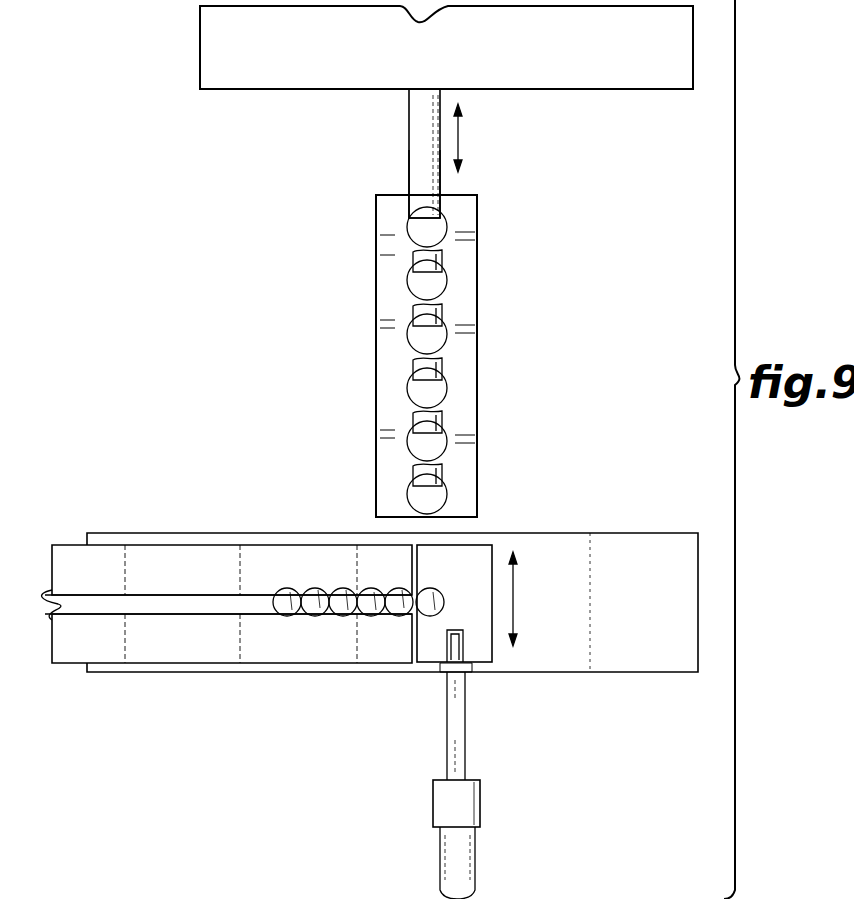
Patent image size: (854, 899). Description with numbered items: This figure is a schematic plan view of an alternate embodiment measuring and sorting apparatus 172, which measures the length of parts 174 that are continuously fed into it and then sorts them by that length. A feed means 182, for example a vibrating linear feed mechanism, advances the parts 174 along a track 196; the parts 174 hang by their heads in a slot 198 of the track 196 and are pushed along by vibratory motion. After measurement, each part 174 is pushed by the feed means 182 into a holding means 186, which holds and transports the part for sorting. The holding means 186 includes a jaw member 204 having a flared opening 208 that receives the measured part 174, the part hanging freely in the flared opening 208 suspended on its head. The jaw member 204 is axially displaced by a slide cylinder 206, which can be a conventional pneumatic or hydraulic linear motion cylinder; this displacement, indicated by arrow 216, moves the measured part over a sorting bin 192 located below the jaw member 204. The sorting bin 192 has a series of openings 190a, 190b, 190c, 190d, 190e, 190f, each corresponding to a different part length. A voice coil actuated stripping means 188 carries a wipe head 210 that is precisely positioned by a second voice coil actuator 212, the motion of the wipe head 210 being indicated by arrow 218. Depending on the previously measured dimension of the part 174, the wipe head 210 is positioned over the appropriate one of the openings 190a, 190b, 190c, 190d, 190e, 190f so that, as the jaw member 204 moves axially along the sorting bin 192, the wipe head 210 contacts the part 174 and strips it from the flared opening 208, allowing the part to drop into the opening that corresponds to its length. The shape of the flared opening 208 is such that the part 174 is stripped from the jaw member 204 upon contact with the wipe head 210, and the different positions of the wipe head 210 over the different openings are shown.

The second voice coil actuator 212 is at (215, 52).
The stripping means 188 is at (326, 133).
The arrow 218 is at (463, 138).
The wipe head 210 is at (405, 213).
The sorting bin 192 is at (388, 258).
The opening 190a is at (433, 230).
The opening 190b is at (436, 283).
The opening 190c is at (436, 338).
The opening 190d is at (436, 393).
The opening 190e is at (436, 445).
The opening 190f is at (436, 498).
The measuring and sorting apparatus 172 is at (615, 479).
The holding means 186 is at (492, 543).
The feed means 182 is at (165, 550).
The track 196 is at (112, 648).
The slot 198 is at (108, 602).
The part 174 is at (343, 598).
The flared opening 208 is at (432, 612).
The jaw member 204 is at (432, 662).
The slide cylinder 206 is at (480, 800).
The arrow 216 is at (515, 605).